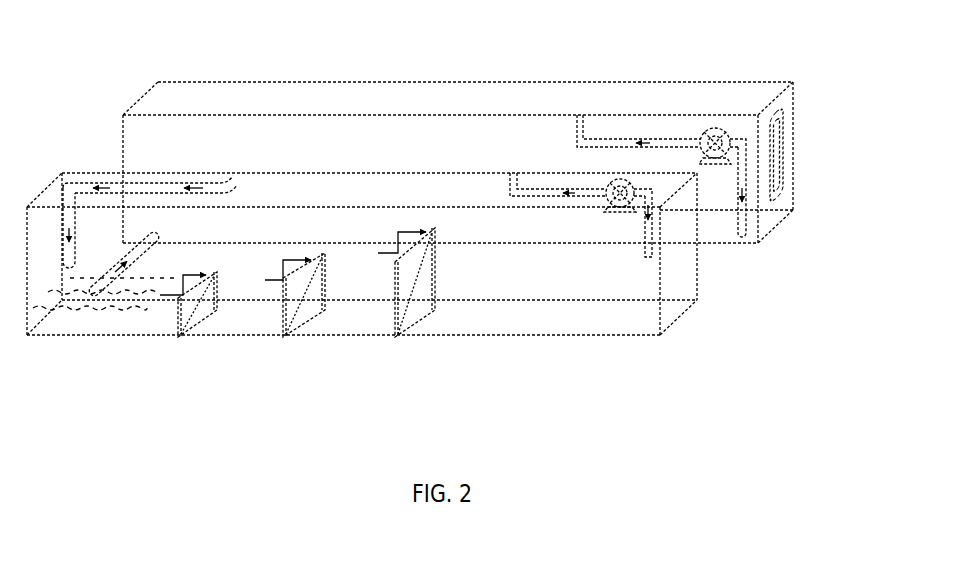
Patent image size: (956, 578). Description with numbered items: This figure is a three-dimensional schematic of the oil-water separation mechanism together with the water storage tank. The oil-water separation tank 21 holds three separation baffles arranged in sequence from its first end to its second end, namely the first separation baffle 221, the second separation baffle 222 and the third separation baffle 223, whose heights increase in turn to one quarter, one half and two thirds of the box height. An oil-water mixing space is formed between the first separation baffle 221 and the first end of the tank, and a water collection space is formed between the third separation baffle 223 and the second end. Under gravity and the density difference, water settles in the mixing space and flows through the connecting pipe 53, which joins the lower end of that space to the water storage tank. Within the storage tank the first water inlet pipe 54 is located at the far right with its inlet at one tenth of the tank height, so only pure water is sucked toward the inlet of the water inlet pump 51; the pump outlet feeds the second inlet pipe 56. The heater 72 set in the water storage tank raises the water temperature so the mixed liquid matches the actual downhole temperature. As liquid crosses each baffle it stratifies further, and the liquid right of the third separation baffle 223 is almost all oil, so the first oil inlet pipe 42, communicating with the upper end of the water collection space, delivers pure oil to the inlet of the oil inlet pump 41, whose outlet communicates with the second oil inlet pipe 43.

The oil-water separation tank 21 is at (496, 312).
The first separation baffle 221 is at (192, 305).
The second separation baffle 222 is at (300, 298).
The third separation baffle 223 is at (413, 300).
The connecting pipe 53 is at (128, 262).
The second oil inlet pipe 43 is at (568, 193).
The oil inlet pump 41 is at (618, 200).
The first oil inlet pipe 42 is at (648, 235).
The second inlet pipe 56 is at (622, 147).
The water inlet pump 51 is at (712, 135).
The heater 72 is at (783, 146).
The first water inlet pipe 54 is at (742, 220).